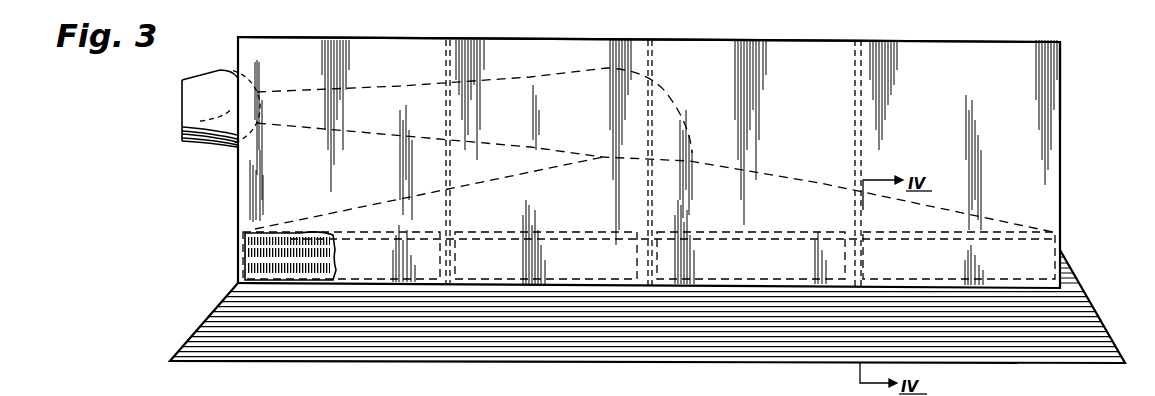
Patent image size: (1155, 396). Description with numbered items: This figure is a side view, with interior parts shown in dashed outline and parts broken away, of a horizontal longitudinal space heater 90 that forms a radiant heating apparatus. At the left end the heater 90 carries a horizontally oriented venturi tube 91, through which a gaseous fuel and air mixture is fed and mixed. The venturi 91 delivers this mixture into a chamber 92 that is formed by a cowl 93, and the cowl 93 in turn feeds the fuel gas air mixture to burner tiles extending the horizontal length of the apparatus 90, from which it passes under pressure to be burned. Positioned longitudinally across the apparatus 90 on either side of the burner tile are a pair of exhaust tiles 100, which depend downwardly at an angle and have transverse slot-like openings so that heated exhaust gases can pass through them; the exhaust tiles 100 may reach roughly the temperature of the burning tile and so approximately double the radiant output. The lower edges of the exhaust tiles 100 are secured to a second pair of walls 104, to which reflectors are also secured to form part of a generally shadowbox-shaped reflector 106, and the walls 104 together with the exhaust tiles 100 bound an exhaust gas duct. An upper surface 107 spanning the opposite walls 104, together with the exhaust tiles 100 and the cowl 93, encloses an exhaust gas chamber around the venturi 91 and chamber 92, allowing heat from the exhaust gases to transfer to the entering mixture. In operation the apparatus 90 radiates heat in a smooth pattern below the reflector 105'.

The horizontal longitudinal space heater 90 is at (1069, 208).
The venturi tube 91 is at (203, 141).
The chamber 92 is at (720, 188).
The cowl 93 is at (775, 174).
The exhaust tiles 100 is at (268, 252).
The second pair of walls 104 is at (1050, 144).
The reflector 105' is at (647, 321).
The shadowbox-shaped reflector 106 is at (1060, 72).
The upper surface 107 is at (845, 50).